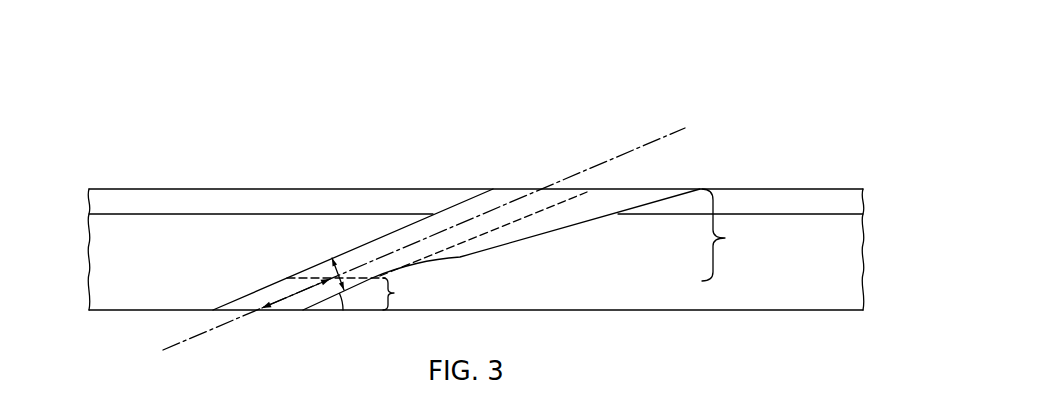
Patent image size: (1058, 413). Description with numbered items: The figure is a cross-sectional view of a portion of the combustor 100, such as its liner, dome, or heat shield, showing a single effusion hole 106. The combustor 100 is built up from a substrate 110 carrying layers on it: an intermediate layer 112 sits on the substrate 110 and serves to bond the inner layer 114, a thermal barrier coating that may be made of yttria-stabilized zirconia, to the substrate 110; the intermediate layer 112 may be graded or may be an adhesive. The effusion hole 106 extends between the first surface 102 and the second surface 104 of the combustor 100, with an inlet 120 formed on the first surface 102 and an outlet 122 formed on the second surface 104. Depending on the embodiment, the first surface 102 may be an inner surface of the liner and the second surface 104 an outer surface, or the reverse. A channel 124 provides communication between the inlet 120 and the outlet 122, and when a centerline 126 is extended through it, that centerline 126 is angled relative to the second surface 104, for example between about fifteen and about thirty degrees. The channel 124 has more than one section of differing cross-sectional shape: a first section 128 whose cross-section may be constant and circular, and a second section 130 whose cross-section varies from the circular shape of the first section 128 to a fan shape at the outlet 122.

The combustor 100 is at (922, 154).
The first surface 102 is at (641, 311).
The second surface 104 is at (788, 189).
The effusion hole 106 is at (555, 157).
The substrate 110 is at (90, 238).
The intermediate layer 112 is at (152, 214).
The thermal barrier coating layer 114 is at (93, 197).
The inlet 120 is at (285, 311).
The outlet 122 is at (632, 189).
The channel 124 is at (382, 250).
The centerline 126 is at (647, 143).
The first section 128 is at (356, 284).
The second section 130 is at (731, 235).